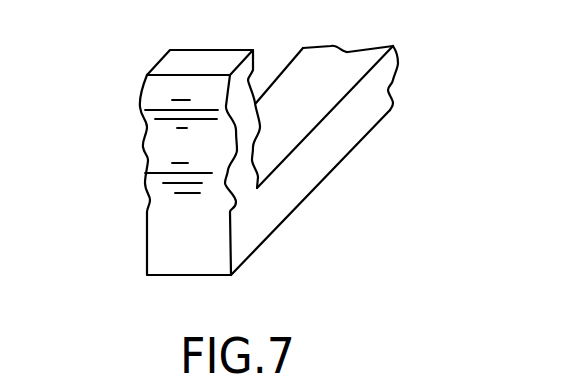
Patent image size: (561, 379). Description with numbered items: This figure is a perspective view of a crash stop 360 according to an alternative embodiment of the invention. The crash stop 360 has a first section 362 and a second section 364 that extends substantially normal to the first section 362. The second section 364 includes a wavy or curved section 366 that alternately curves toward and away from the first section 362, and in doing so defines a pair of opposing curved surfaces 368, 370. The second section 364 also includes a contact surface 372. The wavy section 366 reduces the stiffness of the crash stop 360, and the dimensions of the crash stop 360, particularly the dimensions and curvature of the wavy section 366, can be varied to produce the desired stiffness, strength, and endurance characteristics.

The crash stop 360 is at (341, 160).
The first section 362 is at (357, 130).
The second section 364 is at (245, 73).
The wavy section 366 is at (183, 146).
The curved surface 368 is at (172, 147).
The curved surface 370 is at (258, 152).
The contact surface 372 is at (183, 93).